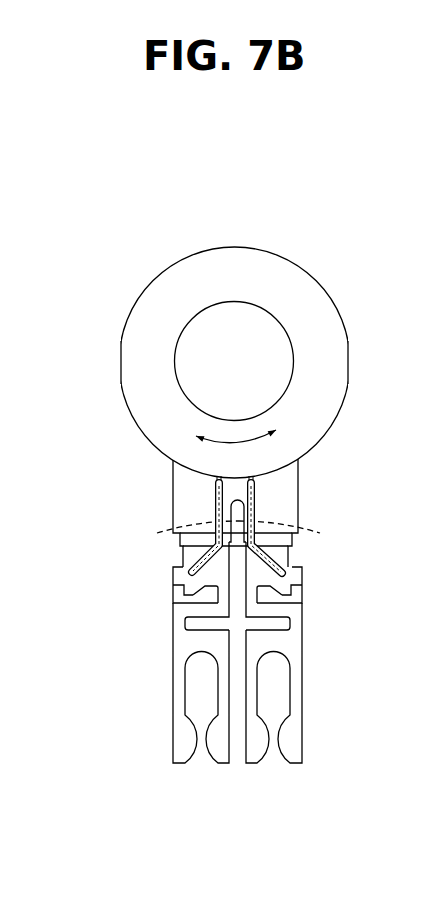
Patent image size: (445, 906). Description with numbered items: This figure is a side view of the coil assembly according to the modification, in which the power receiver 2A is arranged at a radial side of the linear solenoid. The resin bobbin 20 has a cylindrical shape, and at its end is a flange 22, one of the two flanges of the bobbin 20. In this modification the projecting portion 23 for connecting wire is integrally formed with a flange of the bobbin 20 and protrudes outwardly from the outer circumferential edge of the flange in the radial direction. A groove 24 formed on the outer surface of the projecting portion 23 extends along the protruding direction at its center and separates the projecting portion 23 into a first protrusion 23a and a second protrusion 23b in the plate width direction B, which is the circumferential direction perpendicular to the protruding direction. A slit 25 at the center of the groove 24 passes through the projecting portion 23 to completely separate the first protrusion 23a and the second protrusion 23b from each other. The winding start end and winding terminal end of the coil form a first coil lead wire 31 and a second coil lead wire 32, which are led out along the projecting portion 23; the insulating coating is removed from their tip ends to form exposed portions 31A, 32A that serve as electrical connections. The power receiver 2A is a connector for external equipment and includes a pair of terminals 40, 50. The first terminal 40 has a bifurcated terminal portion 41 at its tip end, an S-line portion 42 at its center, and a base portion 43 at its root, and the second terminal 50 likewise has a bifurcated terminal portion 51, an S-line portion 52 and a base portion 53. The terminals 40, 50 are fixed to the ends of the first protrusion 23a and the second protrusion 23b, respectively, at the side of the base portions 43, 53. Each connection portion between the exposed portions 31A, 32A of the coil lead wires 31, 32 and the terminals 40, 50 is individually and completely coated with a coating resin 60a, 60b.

The bobbin 20 is at (323, 286).
The flange 22 is at (316, 405).
The plate width direction B is at (245, 425).
The projecting portion 23 is at (86, 440).
The first protrusion 23a is at (276, 479).
The second protrusion 23b is at (203, 497).
The groove 24 is at (258, 492).
The slit 25 is at (238, 508).
The first coil lead wire 31 is at (318, 533).
The exposed portion 31A is at (320, 533).
The second coil lead wire 32 is at (149, 533).
The exposed portion 32A is at (157, 533).
The first terminal 40 is at (322, 652).
The terminal portion 41 is at (355, 592).
The S-line portion 42 is at (271, 609).
The base portion 43 is at (270, 580).
The second terminal 50 is at (148, 652).
The terminal portion 51 is at (112, 592).
The S-line portion 52 is at (204, 609).
The base portion 53 is at (206, 577).
The first coating portion 60a is at (290, 578).
The second coating portion 60b is at (185, 578).
The power receiver 2A is at (233, 674).